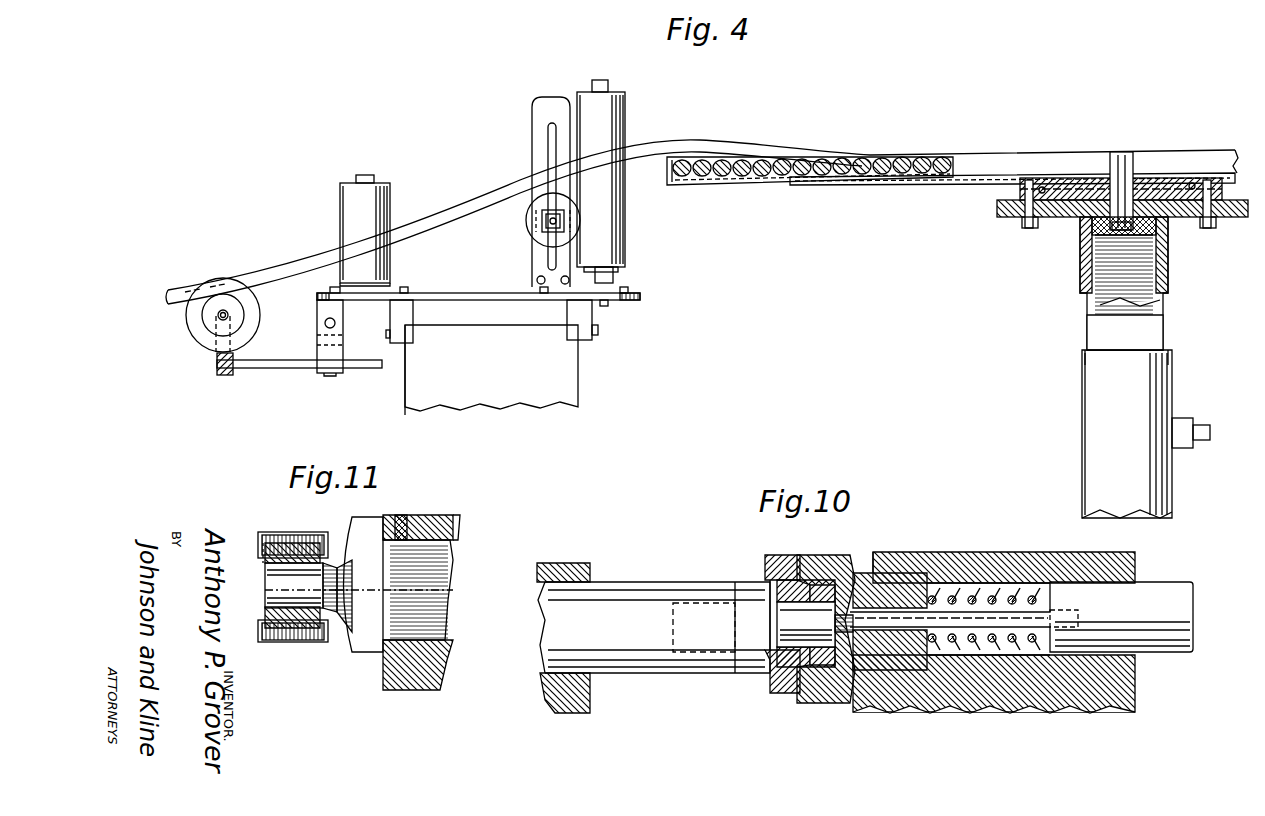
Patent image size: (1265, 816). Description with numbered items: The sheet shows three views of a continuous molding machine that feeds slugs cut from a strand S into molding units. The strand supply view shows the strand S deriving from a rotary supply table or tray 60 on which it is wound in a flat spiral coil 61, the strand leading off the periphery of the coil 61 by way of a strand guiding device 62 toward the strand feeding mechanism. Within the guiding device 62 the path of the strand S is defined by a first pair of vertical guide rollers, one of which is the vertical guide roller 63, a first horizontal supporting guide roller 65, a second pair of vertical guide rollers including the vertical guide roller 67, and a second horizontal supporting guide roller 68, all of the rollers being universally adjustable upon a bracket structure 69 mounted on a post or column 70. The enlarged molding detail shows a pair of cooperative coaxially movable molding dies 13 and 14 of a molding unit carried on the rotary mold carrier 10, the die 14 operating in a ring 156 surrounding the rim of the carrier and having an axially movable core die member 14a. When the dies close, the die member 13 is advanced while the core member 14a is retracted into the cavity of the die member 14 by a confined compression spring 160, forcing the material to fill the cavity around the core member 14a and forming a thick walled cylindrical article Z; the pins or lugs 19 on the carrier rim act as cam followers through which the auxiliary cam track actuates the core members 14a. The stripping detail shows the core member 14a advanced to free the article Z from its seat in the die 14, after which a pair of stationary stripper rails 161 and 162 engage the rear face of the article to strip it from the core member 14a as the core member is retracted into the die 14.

In FIG. 4, the strand S is at (497, 207).
In FIG. 4, the vertical guide roller 67 is at (390, 195).
In FIG. 4, the second horizontal supporting guide roller 68 is at (205, 335).
In FIG. 4, the bracket structure 69 is at (457, 288).
In FIG. 4, the post or column 70 is at (565, 378).
In FIG. 4, the strand guiding device 62 is at (628, 335).
In FIG. 4, the first horizontal supporting guide roller 65 is at (530, 238).
In FIG. 4, the vertical guide roller 63 is at (636, 122).
In FIG. 4, the rotary supply table or tray 60 is at (822, 185).
In FIG. 4, the flat spiral coil 61 is at (930, 155).
In FIG. 11, the stationary stripper rail 162 is at (290, 545).
In FIG. 11, the stationary stripper rail 161 is at (305, 640).
In FIG. 11, the core die member 14a is at (266, 595).
In FIG. 10, the core die member 14a is at (790, 690).
In FIG. 11, the molding die 14 is at (373, 640).
In FIG. 10, the molding die 14 is at (835, 565).
In FIG. 10, the molding die 13 is at (780, 572).
In FIG. 10, the article Z is at (828, 637).
In FIG. 10, the ring 156 is at (1012, 560).
In FIG. 10, the confined compression spring 160 is at (990, 640).
In FIG. 10, the pins or lugs 19 is at (1170, 590).
In FIG. 10, the rotary mold carrier 10 is at (963, 533).